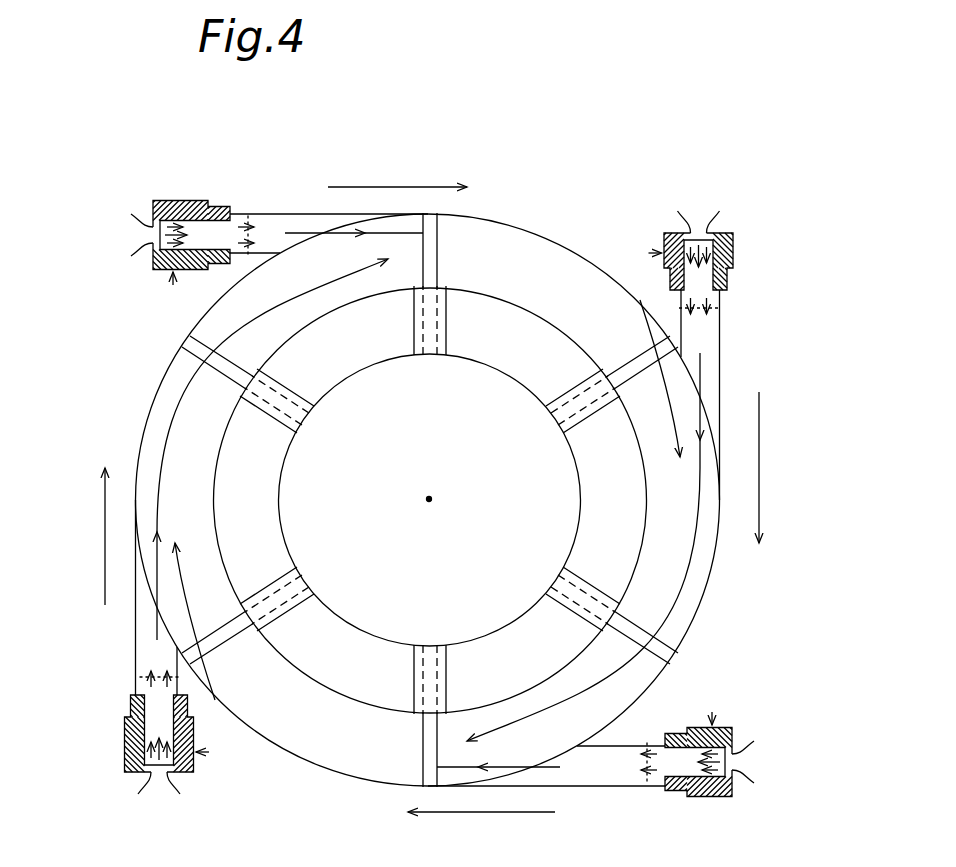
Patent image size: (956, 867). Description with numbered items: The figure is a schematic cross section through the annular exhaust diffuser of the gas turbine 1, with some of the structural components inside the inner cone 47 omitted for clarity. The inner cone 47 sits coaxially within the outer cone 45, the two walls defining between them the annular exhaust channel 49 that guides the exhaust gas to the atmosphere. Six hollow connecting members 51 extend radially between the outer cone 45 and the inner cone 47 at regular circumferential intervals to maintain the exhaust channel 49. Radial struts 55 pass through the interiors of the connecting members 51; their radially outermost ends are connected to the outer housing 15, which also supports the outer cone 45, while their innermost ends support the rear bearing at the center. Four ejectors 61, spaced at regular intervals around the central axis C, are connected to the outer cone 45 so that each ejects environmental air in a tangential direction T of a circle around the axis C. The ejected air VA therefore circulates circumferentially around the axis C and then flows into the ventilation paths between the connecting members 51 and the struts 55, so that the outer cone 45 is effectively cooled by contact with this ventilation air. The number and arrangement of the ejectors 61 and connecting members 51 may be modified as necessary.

The apparatus 1 is at (105, 188).
The housing 15 is at (550, 240).
The outer cone 45 is at (560, 328).
The inner cone 47 is at (487, 365).
The exhaust channel 49 is at (264, 496).
The connecting members 51 is at (448, 328).
The struts 55 is at (440, 261).
The ejectors 61 is at (177, 200).
The central axis C is at (430, 501).
The tangential direction T is at (397, 187).
The ventilation air VA is at (495, 242).